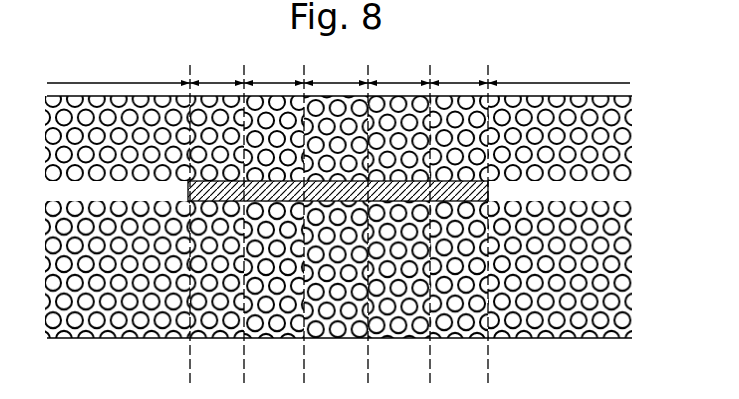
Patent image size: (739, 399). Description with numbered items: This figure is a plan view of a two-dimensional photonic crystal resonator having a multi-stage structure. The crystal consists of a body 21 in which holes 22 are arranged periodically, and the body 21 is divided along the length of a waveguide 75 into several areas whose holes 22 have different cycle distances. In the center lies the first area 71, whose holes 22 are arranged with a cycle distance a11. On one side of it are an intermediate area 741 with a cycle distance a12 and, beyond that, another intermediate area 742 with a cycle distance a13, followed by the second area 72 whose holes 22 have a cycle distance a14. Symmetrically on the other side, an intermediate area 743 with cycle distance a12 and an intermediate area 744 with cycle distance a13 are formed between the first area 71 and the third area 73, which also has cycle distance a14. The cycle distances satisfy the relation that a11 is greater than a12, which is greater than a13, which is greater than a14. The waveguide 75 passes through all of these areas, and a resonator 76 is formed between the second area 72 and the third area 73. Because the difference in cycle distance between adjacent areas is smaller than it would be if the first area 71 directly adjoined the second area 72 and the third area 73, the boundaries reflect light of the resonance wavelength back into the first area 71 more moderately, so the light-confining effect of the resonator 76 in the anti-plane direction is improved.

The second area 72 is at (117, 195).
The intermediate area 742 is at (217, 195).
The intermediate area 741 is at (274, 195).
The first area 71 is at (336, 195).
The intermediate area 743 is at (399, 195).
The intermediate area 744 is at (459, 195).
The third area 73 is at (560, 195).
The body 21 is at (617, 133).
The hole 22 is at (625, 283).
The waveguide 75 is at (615, 187).
The resonator 76 is at (428, 187).
The cycle distance a11 is at (310, 275).
The cycle distance a12 is at (250, 293).
The cycle distance a13 is at (190, 308).
The cycle distance a14 is at (98, 320).